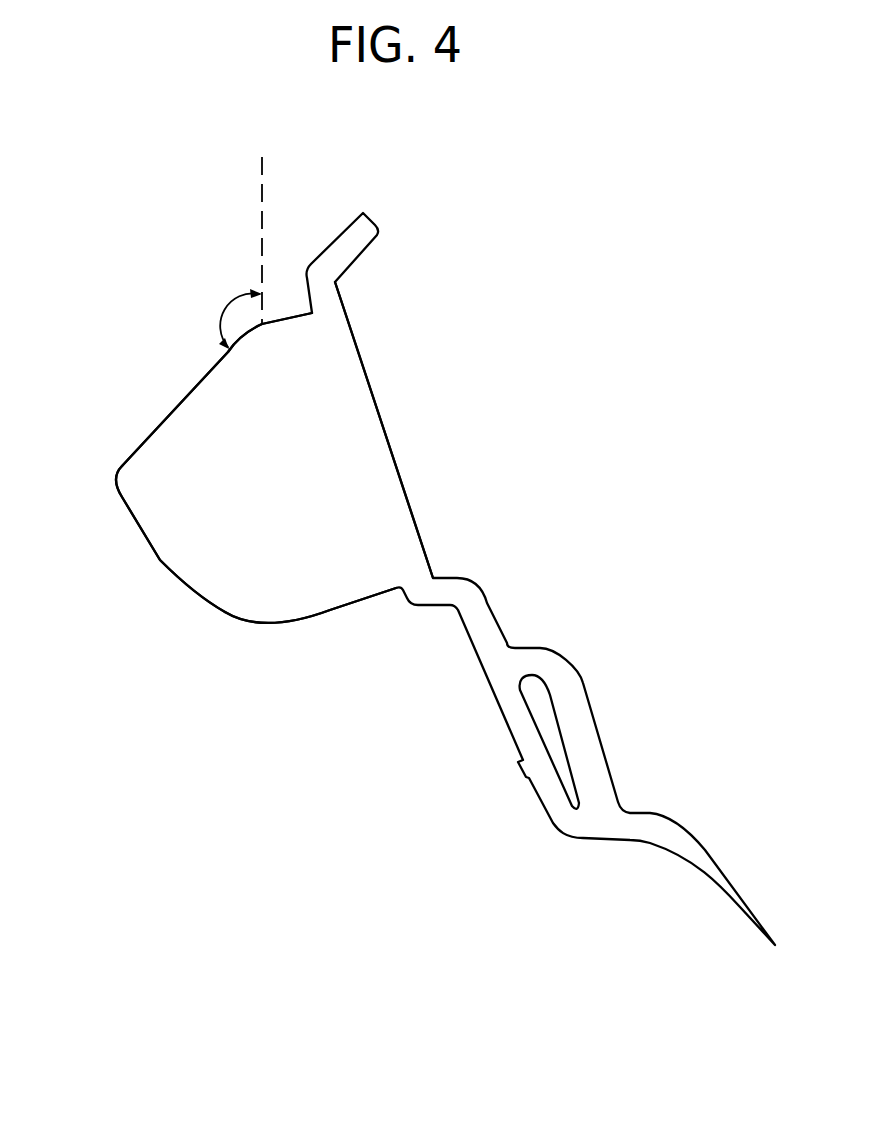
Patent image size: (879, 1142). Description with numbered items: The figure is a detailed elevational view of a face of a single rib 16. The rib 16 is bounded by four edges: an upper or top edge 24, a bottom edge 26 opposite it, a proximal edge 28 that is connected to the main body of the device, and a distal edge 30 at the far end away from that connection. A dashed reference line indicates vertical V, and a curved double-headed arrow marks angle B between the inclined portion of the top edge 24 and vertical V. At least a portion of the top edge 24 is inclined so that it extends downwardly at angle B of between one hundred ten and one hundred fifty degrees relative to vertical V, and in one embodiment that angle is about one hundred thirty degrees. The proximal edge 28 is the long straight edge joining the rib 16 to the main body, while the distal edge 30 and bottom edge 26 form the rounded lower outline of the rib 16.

The rib 16 is at (340, 415).
The top edge 24 is at (185, 398).
The bottom edge 26 is at (340, 608).
The proximal edge 28 is at (395, 458).
The distal edge 30 is at (157, 560).
The vertical V is at (262, 187).
The angle B is at (227, 315).